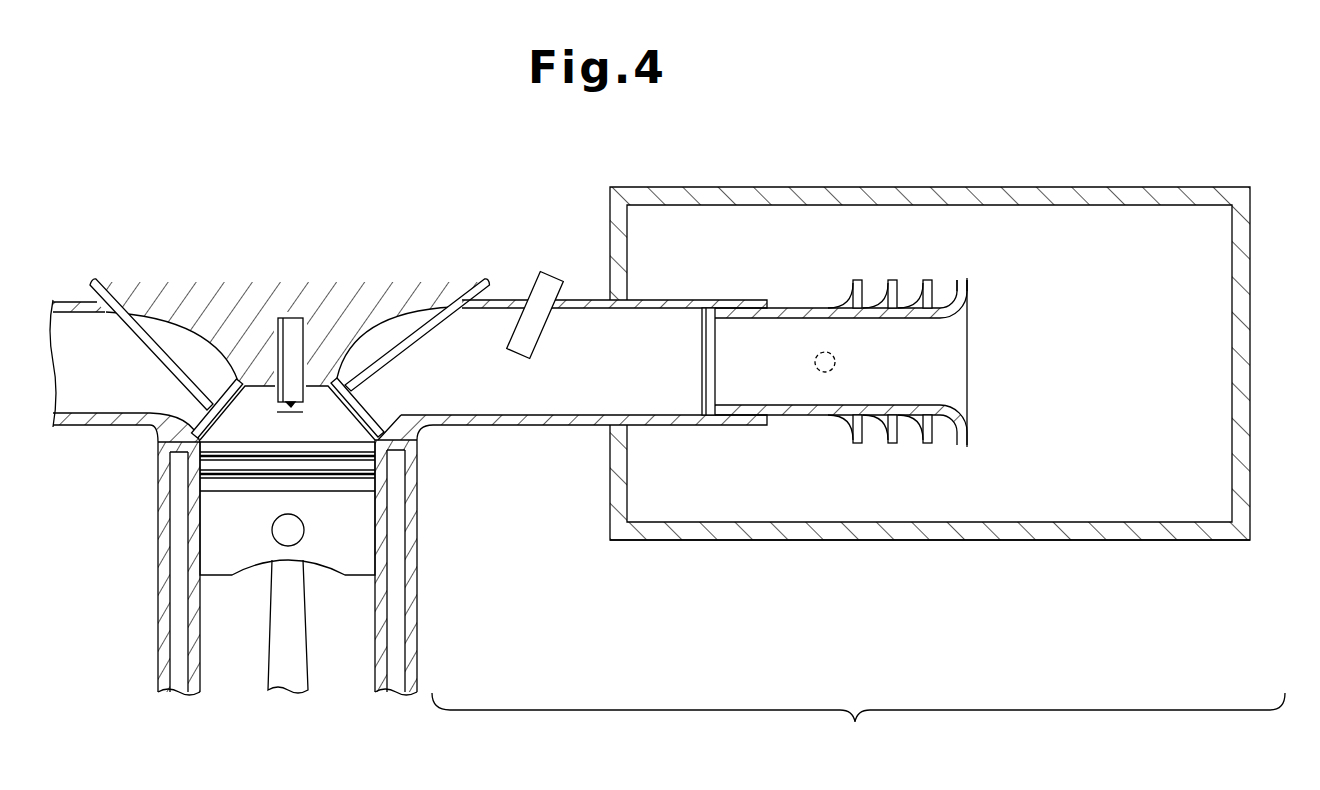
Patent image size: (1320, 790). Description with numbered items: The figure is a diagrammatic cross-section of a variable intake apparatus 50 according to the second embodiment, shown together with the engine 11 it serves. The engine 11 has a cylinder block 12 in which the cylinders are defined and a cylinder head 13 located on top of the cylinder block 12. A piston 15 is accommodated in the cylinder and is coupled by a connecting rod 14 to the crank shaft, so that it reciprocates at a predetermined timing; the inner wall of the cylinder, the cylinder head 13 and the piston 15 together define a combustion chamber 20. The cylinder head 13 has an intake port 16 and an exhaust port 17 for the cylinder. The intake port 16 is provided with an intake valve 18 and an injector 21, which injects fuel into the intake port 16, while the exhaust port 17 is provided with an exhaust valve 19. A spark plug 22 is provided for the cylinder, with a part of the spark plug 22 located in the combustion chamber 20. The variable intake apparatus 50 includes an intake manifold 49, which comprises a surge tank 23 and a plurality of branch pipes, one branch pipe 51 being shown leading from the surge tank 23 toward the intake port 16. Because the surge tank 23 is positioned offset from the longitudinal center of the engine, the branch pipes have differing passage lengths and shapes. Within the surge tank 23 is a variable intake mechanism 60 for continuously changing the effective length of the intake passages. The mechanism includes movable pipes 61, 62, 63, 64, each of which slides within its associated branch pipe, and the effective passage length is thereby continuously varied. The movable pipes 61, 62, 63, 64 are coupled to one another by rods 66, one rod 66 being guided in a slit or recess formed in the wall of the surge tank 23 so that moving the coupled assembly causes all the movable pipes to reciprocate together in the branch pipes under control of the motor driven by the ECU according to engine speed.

The engine 11 is at (152, 623).
The cylinder block 12 is at (158, 537).
The cylinder head 13 is at (222, 310).
The connecting rod 14 is at (303, 672).
The piston 15 is at (240, 556).
The intake port 16 is at (440, 414).
The exhaust port 17 is at (155, 412).
The intake valve 18 is at (428, 355).
The exhaust valve 19 is at (143, 348).
The combustion chamber 20 is at (278, 432).
The injector 21 is at (545, 270).
The spark plug 22 is at (304, 330).
The surge tank 23 is at (1250, 390).
The intake manifold 49 is at (648, 542).
The variable intake apparatus 50 is at (858, 739).
The branch pipe 51 is at (536, 440).
The variable intake mechanism 60 is at (1023, 442).
The movable pipe 61 is at (963, 280).
The movable pipe 62 is at (927, 278).
The movable pipe 63 is at (890, 278).
The movable pipe 64 is at (855, 278).
The rod 66 is at (836, 360).